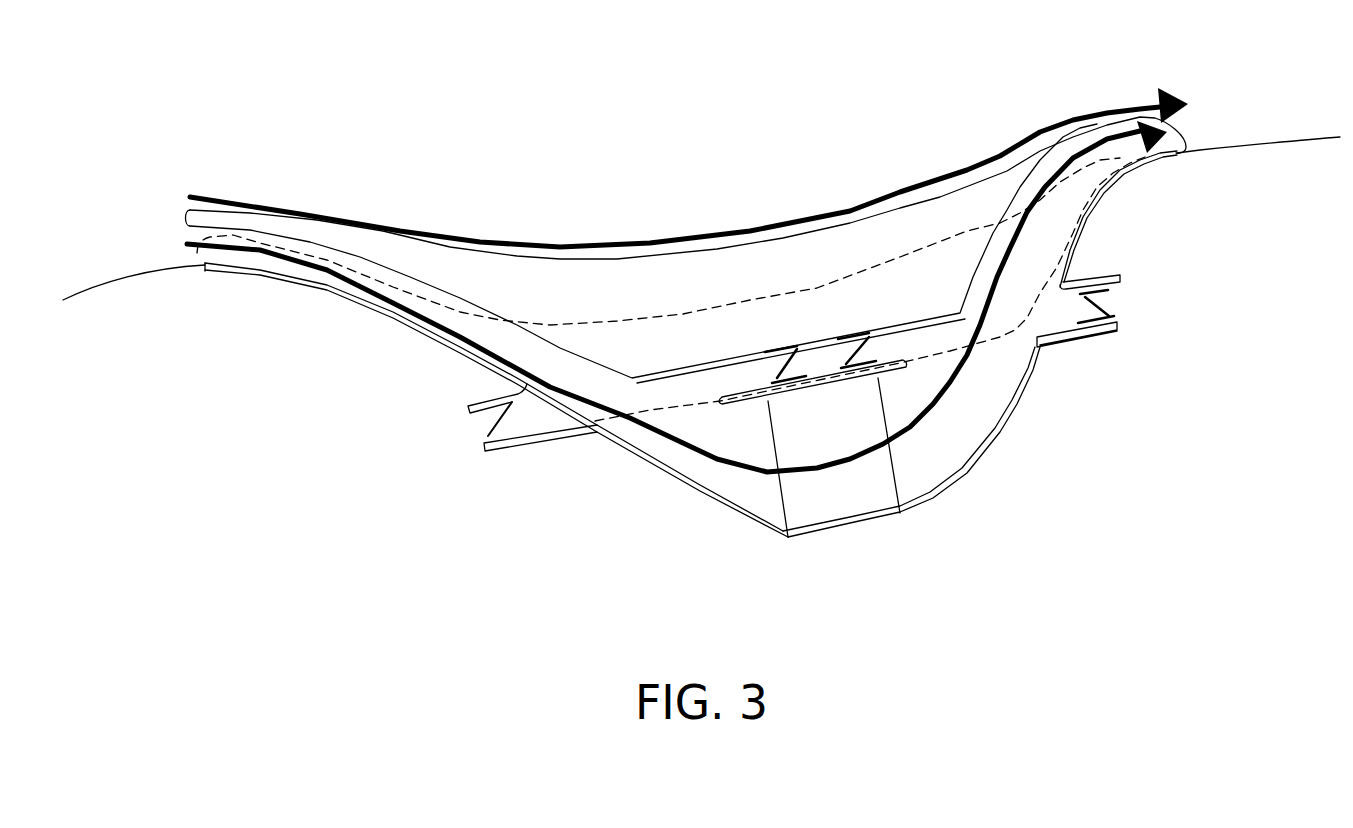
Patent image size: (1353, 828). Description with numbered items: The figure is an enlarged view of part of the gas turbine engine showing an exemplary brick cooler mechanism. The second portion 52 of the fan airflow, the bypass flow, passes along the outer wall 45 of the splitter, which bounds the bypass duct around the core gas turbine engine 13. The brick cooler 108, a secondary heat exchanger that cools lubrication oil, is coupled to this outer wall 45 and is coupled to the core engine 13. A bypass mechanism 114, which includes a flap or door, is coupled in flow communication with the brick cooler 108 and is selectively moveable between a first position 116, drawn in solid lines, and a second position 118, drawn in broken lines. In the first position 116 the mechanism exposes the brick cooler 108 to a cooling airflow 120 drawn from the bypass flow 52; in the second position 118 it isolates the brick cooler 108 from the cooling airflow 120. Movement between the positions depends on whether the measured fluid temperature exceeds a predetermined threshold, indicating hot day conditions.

The core gas turbine engine 13 is at (218, 101).
The outer wall of splitter 45 is at (123, 280).
The second portion of airflow 52 is at (576, 244).
The brick cooler 108 is at (845, 493).
The bypass mechanism 114 is at (713, 275).
The first position 116 is at (903, 190).
The second position 118 is at (1018, 352).
The cooling airflow 120 is at (927, 416).